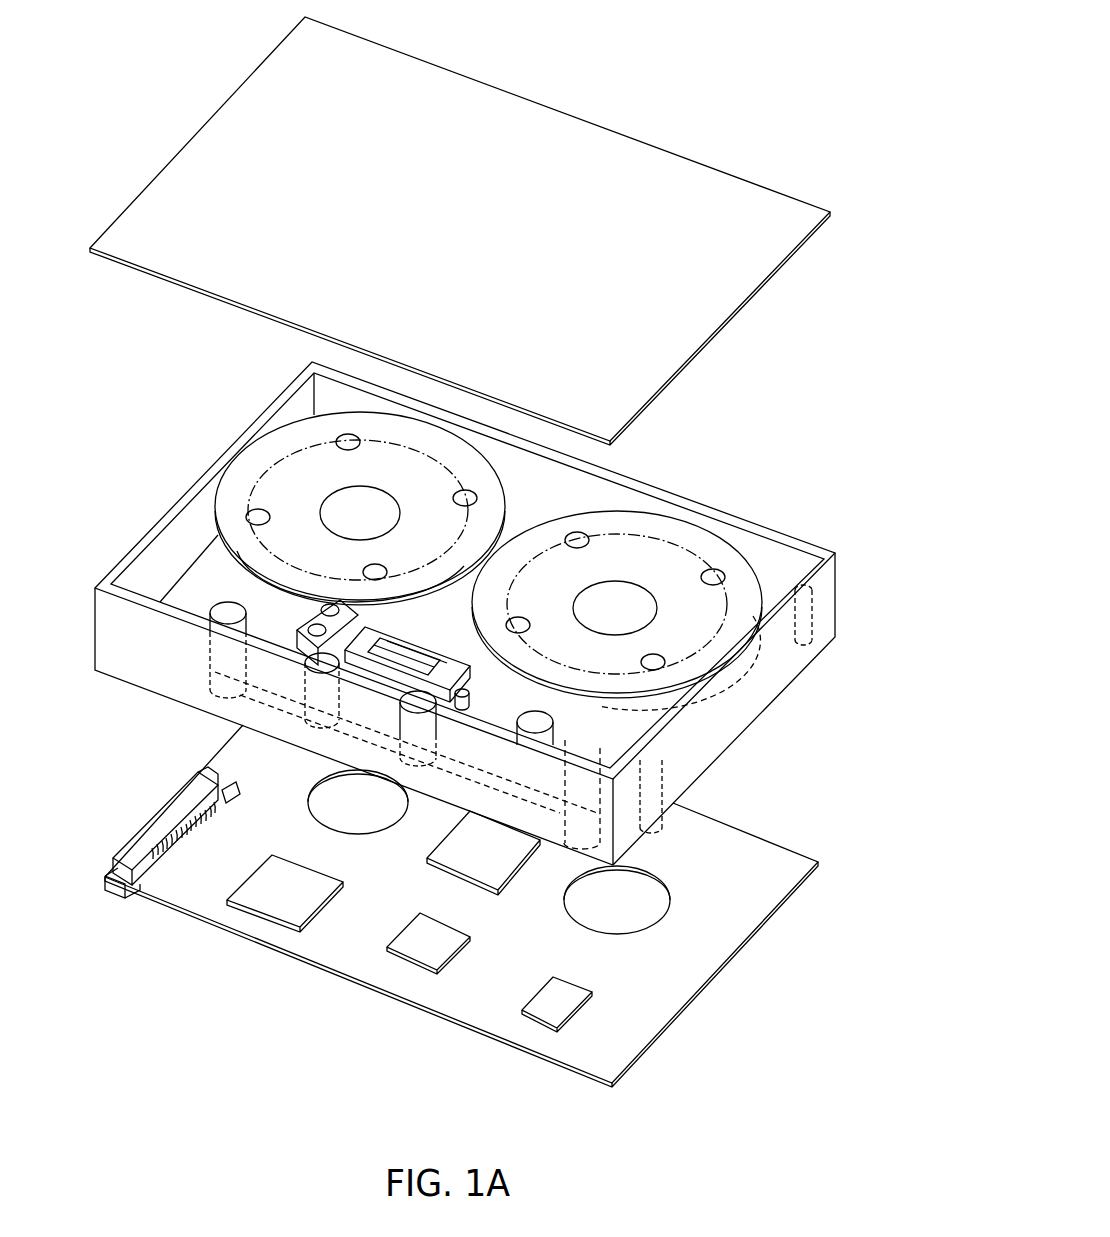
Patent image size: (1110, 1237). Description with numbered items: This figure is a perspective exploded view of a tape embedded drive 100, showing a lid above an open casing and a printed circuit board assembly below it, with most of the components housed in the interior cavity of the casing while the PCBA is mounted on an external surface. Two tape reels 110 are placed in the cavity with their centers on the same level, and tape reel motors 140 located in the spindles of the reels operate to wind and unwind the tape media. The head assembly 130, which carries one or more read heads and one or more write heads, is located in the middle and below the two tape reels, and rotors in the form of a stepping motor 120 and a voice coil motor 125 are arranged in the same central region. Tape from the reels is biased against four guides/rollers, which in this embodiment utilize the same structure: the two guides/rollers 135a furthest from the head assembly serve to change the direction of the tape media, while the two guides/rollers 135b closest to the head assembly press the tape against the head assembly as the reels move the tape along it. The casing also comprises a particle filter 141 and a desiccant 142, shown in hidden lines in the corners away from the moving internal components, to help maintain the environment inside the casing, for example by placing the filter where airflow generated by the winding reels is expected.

The tape embedded drive 100 is at (735, 88).
The tape reel 110 is at (415, 420).
The stepping motor 120 is at (290, 628).
The voice coil motor 125 is at (373, 652).
The head assembly 130 is at (398, 660).
The tape guides/rollers 135a is at (215, 607).
The tape guides/rollers 135b is at (320, 662).
The tape reel motor 140 is at (335, 492).
The particle filter 141 is at (812, 617).
The desiccant 142 is at (662, 812).